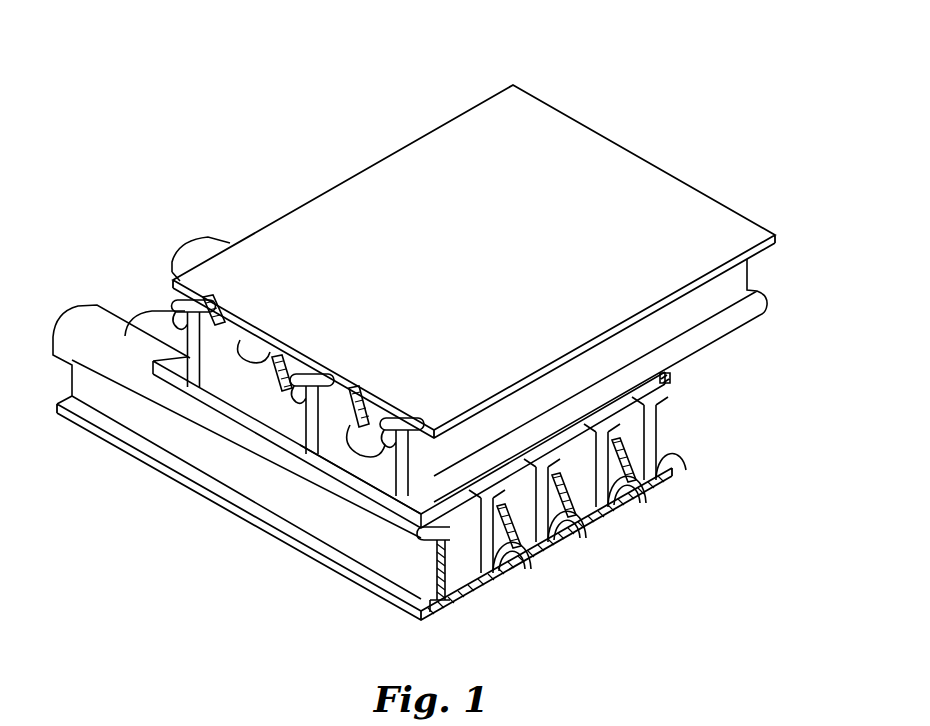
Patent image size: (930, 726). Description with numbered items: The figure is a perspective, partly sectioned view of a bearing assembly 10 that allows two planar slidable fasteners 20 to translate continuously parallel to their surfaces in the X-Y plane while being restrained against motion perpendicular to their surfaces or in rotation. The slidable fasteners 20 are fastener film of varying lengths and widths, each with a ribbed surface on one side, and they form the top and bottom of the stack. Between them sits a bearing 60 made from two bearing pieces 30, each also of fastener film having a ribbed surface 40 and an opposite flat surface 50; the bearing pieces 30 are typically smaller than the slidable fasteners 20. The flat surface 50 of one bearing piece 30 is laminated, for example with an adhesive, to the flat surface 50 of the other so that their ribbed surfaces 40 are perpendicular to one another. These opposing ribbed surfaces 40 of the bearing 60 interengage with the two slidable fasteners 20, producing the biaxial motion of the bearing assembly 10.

The bearing assembly 10 is at (644, 101).
The slidable fastener 20 is at (677, 168).
The bearing piece 30 is at (674, 451).
The ribbed surface 40 is at (647, 473).
The flat surface 50 is at (667, 377).
The bearing 60 is at (348, 482).